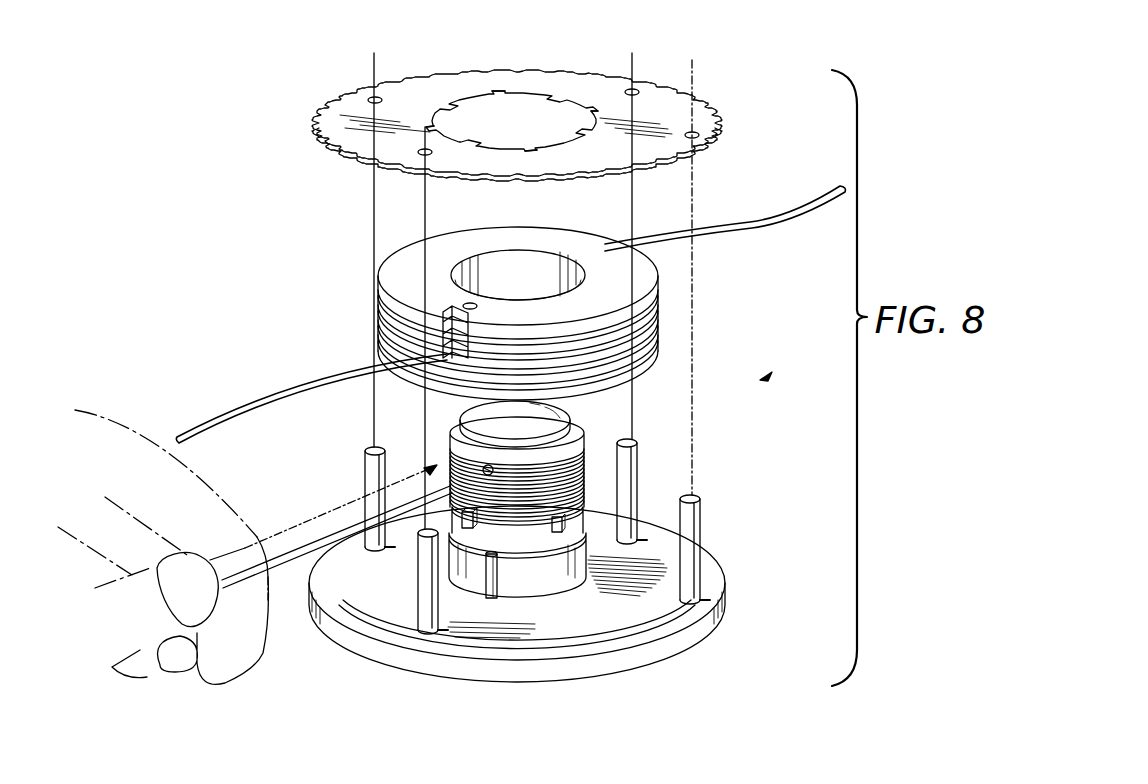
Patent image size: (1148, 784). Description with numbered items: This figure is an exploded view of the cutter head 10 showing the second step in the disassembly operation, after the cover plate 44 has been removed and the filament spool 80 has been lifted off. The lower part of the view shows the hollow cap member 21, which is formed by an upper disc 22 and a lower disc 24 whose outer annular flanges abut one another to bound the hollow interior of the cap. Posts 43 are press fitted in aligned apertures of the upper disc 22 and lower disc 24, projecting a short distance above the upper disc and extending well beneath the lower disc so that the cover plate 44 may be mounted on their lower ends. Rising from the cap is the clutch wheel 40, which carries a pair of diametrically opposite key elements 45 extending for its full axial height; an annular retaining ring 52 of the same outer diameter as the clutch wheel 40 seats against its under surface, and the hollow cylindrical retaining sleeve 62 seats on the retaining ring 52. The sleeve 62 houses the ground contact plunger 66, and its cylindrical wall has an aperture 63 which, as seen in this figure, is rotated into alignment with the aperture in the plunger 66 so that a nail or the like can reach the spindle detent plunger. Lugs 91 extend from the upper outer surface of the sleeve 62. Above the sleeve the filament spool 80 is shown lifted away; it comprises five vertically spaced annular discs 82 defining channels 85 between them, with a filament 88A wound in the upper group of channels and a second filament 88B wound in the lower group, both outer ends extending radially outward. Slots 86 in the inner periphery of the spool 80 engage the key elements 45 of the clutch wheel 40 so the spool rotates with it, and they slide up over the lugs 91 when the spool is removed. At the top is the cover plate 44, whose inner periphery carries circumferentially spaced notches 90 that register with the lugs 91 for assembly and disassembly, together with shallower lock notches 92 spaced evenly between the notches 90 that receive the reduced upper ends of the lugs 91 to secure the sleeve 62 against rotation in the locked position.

The cutter head 10 is at (762, 379).
The hollow cap member 21 is at (690, 650).
The upper disc 22 is at (483, 673).
The lower disc 24 is at (553, 658).
The clutch wheel 40 is at (532, 584).
The post 43 is at (368, 478).
The cover plate 44 is at (657, 97).
The key element 45 is at (490, 590).
The annular retaining ring 52 is at (537, 547).
The cylindrical retaining sleeve 62 is at (585, 437).
The aperture 63 is at (483, 468).
The ground contact plunger 66 is at (550, 420).
The filament spool 80 is at (640, 275).
The annular discs 82 is at (442, 345).
The channels 85 is at (657, 343).
The slots 86 is at (485, 298).
The filament 88A is at (245, 408).
The second filament 88B is at (762, 222).
The notches 90 is at (446, 108).
The lugs 91 is at (560, 527).
The lock notches 92 is at (497, 92).